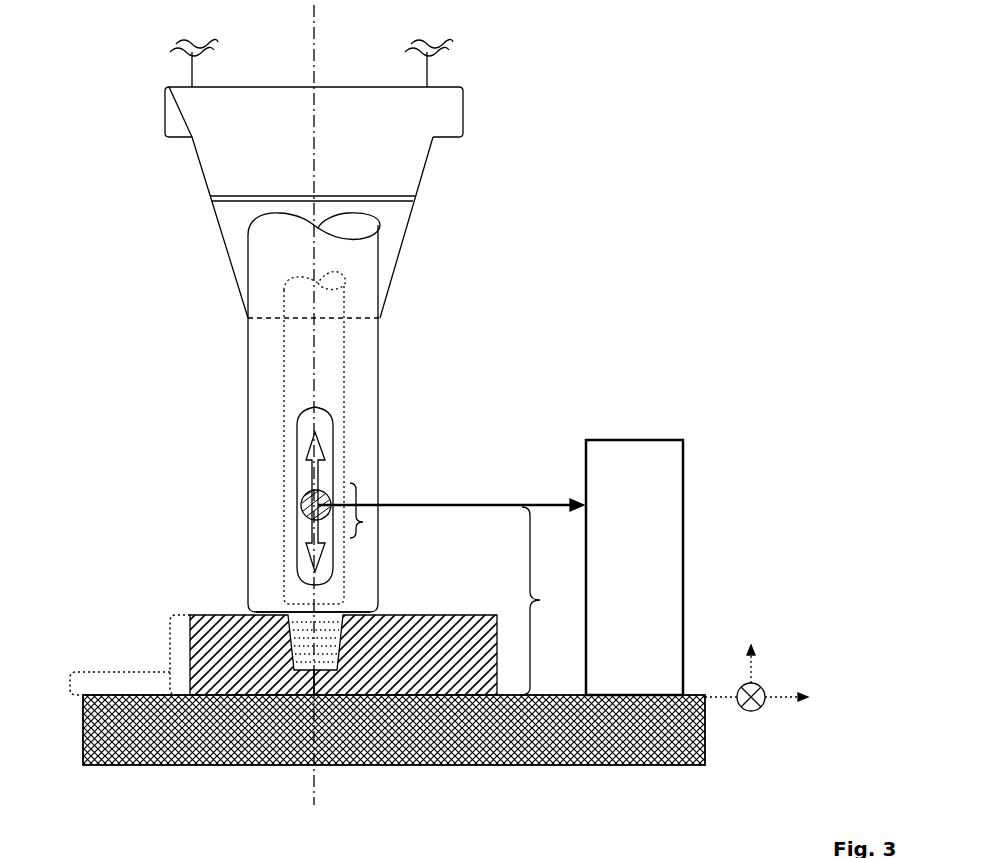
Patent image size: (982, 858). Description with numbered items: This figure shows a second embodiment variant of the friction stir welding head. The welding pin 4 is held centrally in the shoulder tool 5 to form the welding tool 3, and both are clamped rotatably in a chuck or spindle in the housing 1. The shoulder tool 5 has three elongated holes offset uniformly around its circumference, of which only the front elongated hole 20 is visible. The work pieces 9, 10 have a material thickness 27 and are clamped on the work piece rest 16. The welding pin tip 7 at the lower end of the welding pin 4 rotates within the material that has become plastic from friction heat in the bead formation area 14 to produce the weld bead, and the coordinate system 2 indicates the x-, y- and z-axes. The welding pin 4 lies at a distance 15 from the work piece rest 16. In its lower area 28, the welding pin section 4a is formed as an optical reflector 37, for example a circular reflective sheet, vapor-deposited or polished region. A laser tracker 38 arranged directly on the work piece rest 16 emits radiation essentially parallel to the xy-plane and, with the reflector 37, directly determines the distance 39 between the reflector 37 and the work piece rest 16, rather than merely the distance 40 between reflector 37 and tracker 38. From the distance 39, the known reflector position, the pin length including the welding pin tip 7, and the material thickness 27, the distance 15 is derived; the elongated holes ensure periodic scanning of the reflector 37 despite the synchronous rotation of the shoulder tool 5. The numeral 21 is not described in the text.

The housing 1 is at (443, 104).
The coordinate system 2 is at (763, 683).
The welding tool 3 is at (228, 372).
The welding pin 4 is at (332, 362).
The welding pin section 4a is at (363, 522).
The shoulder tool 5 is at (367, 390).
The welding pin tip 7 is at (311, 651).
The work piece 9 is at (201, 643).
The work piece 10 is at (454, 648).
The bead formation area 14 is at (313, 602).
The distance 15 is at (63, 680).
The work piece rest 16 is at (705, 745).
The front elongated hole 20 is at (333, 415).
The sensor 21 is at (333, 457).
The material thickness 27 is at (167, 653).
The lower area 28 is at (270, 543).
The optical reflector 37 is at (300, 497).
The laser tracker 38 is at (621, 492).
The distance 39 is at (546, 601).
The distance 40 is at (553, 505).